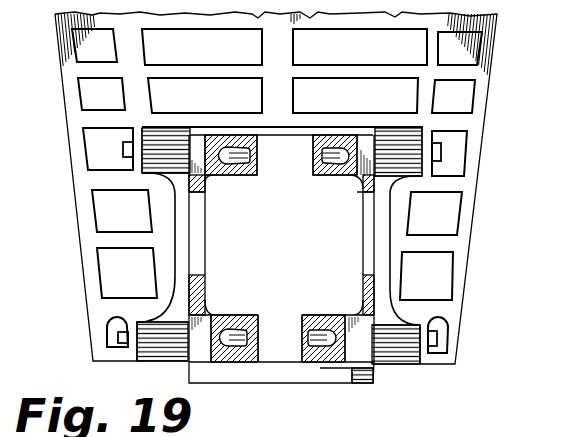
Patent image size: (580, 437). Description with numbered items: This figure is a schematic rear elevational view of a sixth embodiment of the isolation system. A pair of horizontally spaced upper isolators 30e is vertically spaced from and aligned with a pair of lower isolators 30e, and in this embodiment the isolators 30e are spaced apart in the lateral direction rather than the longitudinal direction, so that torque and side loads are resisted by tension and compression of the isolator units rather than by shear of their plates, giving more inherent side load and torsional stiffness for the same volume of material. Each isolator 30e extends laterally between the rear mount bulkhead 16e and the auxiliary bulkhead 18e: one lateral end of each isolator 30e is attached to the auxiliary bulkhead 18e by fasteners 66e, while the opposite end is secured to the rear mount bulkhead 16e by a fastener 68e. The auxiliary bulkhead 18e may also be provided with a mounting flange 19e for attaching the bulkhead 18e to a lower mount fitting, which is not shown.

The rear mount bulkhead 16e is at (453, 281).
The auxiliary bulkhead 18e is at (368, 230).
The mounting flange 19e is at (352, 373).
The isolator 30e is at (172, 145).
The fastener 66e is at (334, 162).
The fastener 68e is at (123, 150).